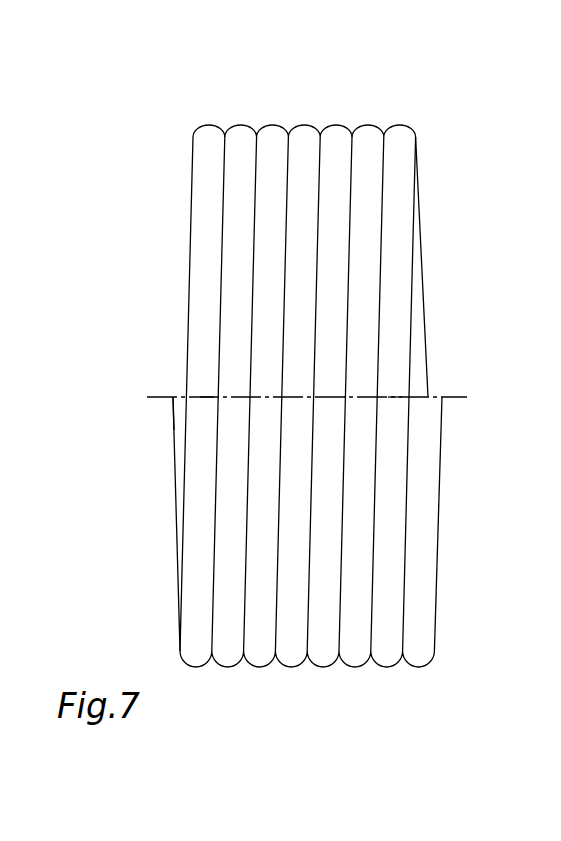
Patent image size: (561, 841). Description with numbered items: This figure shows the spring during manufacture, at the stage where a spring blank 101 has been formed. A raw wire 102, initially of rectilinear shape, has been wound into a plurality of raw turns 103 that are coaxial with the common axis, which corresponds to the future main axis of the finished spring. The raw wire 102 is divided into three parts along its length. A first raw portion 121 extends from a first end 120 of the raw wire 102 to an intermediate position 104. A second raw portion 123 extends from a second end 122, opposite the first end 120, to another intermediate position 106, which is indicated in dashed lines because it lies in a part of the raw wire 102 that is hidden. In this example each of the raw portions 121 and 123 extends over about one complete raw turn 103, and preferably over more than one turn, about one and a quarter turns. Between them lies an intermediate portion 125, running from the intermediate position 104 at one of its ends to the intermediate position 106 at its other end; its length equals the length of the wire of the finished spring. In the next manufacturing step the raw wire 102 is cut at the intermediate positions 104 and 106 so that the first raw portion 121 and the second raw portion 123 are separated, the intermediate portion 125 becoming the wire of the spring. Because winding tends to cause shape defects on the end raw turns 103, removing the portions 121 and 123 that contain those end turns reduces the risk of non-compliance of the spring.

The spring blank 101 is at (158, 146).
The raw wire 102 is at (207, 222).
The raw turns 103 is at (233, 170).
The intermediate position 104 is at (394, 410).
The intermediate position 106 is at (207, 385).
The first end 120 is at (431, 387).
The first raw portion 121 is at (427, 465).
The second end 122 is at (176, 385).
The second raw portion 123 is at (182, 445).
The intermediate portion 125 is at (290, 518).